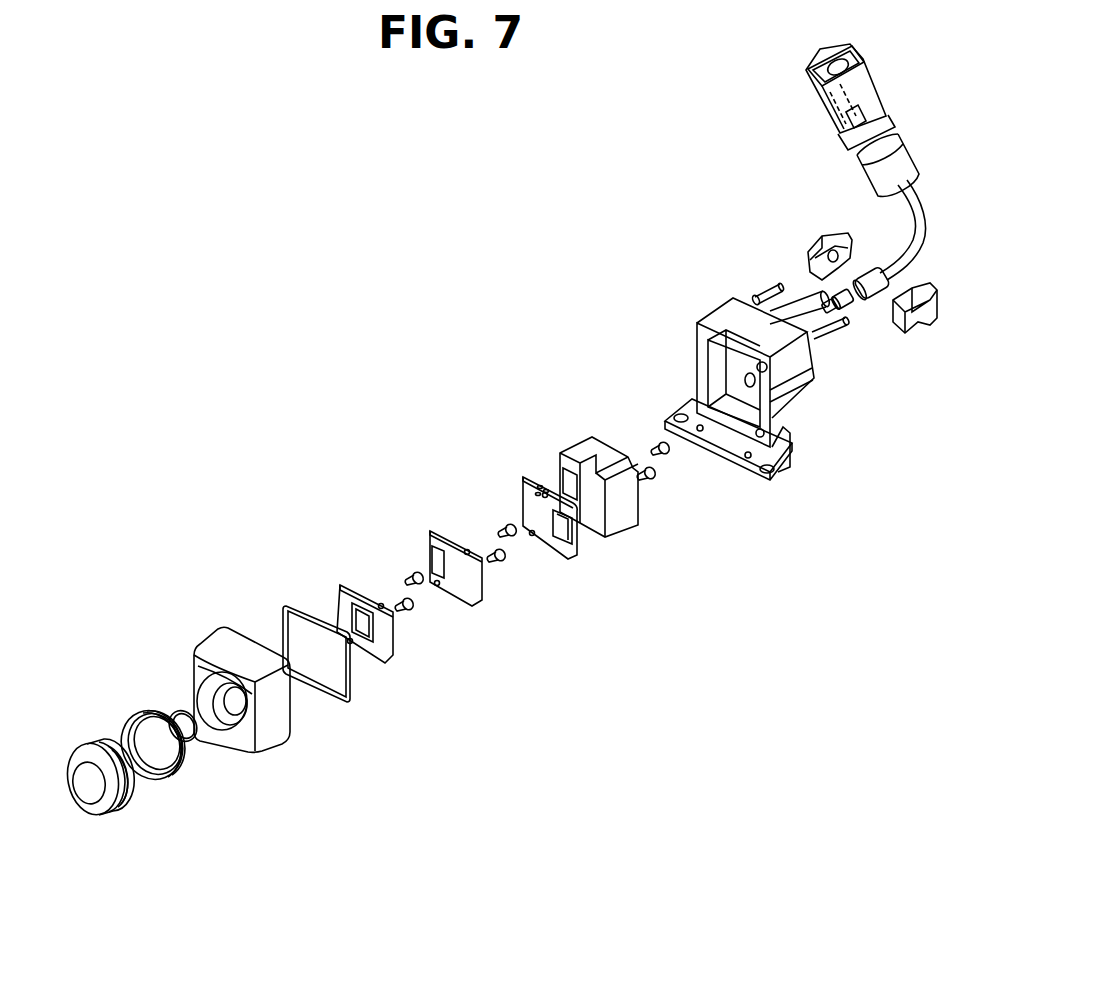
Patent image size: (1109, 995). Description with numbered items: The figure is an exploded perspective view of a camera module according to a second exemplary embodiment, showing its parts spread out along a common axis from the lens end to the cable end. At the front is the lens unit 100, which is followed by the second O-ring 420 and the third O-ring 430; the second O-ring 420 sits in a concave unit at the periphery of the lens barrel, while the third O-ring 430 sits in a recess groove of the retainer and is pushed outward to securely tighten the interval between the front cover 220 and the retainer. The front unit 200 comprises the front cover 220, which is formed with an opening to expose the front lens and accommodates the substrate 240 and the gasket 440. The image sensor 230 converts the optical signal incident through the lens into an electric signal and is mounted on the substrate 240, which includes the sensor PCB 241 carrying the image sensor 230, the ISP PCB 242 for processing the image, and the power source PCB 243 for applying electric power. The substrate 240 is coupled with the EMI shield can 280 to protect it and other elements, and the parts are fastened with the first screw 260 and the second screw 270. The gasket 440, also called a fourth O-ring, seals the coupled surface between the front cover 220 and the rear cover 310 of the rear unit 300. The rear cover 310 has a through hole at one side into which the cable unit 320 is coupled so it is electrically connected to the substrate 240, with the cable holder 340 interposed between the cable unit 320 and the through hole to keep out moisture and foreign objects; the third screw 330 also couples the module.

The lens unit 100 is at (118, 803).
The front unit 200 is at (528, 352).
The front cover 220 is at (218, 637).
The image sensor 230 is at (331, 584).
The substrate 240 is at (443, 452).
The sensor PCB 241 is at (358, 582).
The ISP PCB 242 is at (435, 530).
The power source PCB 243 is at (527, 488).
The first screw 260 is at (657, 447).
The second screw 270 is at (418, 577).
The EMI shield can 280 is at (560, 457).
The rear unit 300 is at (803, 175).
The rear cover 310 is at (732, 323).
The cable unit 320 is at (870, 180).
The third screw 330 is at (767, 288).
The cable holder 340 is at (817, 242).
The second O-ring 420 is at (178, 710).
The third O-ring 430 is at (175, 777).
The gasket 440 is at (347, 687).